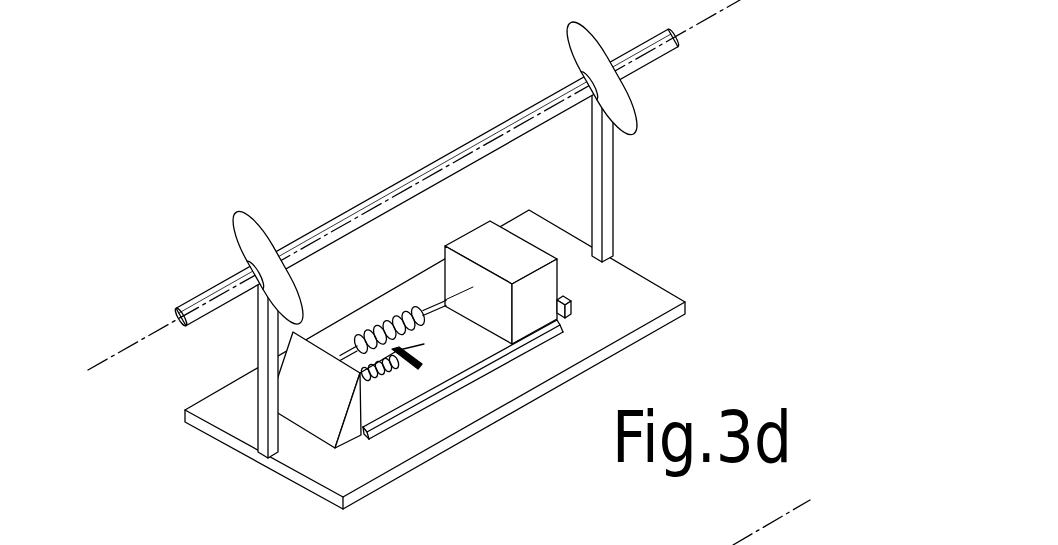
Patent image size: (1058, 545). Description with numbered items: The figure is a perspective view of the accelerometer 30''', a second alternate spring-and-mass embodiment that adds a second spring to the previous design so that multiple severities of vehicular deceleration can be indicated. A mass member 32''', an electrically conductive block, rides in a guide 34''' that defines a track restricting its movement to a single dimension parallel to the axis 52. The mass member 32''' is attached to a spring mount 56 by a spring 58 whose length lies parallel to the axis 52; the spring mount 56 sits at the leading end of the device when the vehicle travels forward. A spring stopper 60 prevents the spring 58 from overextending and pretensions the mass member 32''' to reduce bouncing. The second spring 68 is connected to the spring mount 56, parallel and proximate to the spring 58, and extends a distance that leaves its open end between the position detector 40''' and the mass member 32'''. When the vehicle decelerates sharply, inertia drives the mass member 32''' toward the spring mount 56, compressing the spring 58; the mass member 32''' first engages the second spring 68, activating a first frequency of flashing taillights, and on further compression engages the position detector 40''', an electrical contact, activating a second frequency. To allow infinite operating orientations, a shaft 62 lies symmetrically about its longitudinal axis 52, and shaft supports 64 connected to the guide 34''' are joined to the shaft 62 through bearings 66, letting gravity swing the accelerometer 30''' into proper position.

The accelerometer 30''' is at (150, 223).
The axis 52 is at (454, 272).
The shaft 62 is at (425, 178).
The bearings 66 is at (435, 173).
The shaft supports 64 is at (435, 268).
The mass member 32''' is at (565, 282).
The spring stopper 60 is at (631, 332).
The guide 34''' is at (473, 379).
The second spring 68 is at (443, 396).
The position detector 40''' is at (415, 393).
The spring 58 is at (387, 312).
The spring mount 56 is at (309, 428).